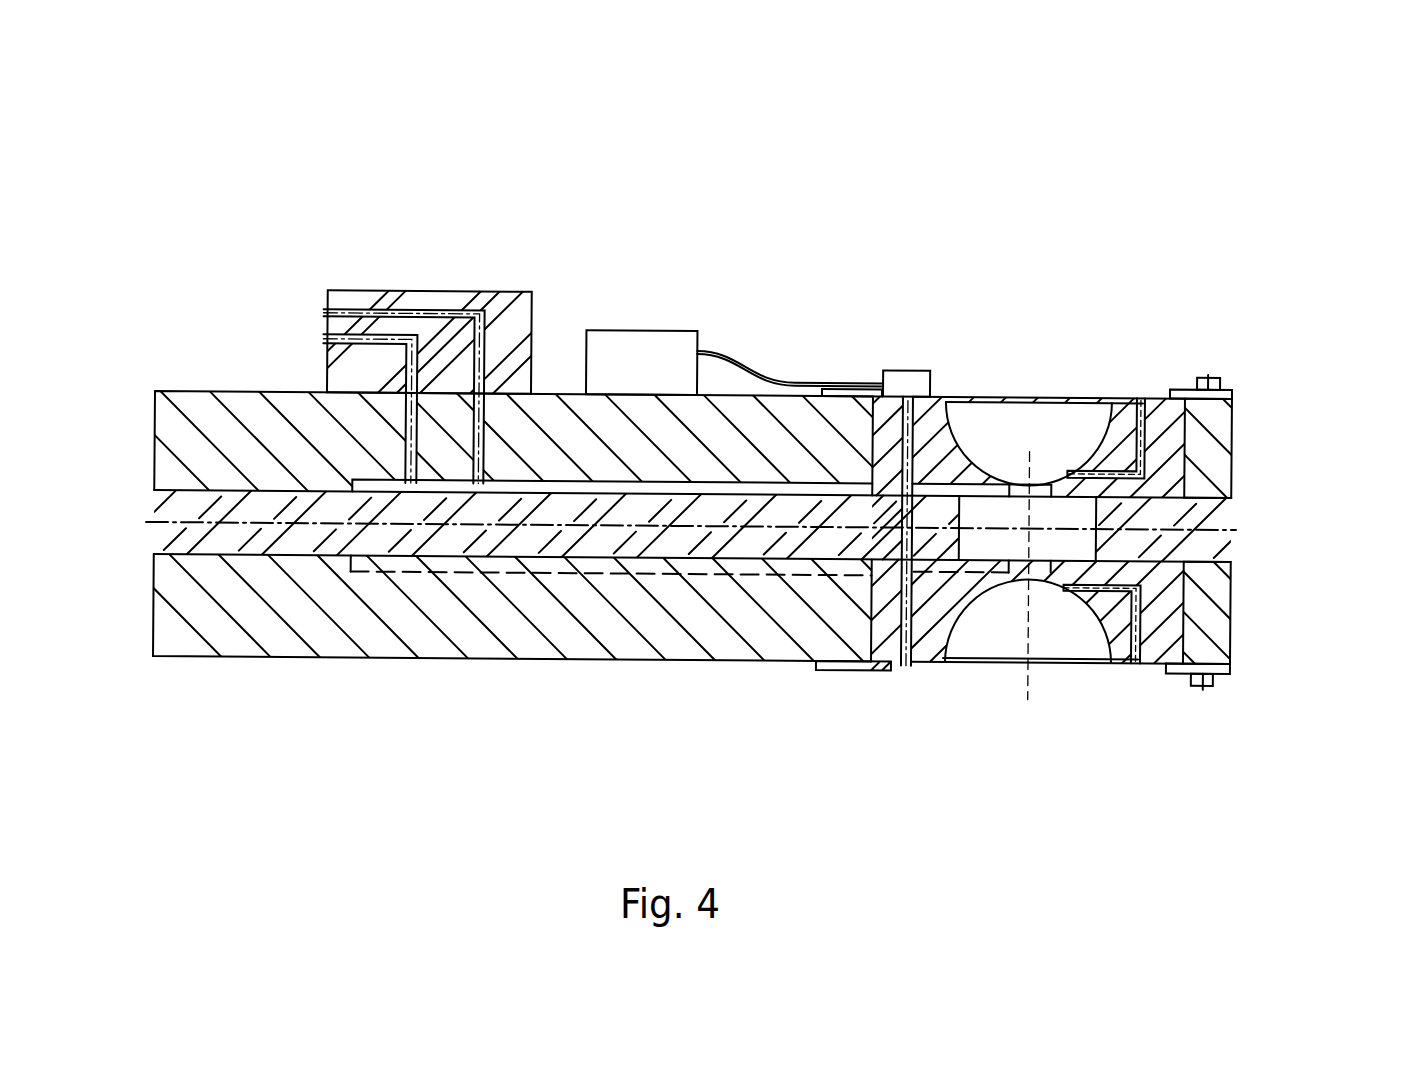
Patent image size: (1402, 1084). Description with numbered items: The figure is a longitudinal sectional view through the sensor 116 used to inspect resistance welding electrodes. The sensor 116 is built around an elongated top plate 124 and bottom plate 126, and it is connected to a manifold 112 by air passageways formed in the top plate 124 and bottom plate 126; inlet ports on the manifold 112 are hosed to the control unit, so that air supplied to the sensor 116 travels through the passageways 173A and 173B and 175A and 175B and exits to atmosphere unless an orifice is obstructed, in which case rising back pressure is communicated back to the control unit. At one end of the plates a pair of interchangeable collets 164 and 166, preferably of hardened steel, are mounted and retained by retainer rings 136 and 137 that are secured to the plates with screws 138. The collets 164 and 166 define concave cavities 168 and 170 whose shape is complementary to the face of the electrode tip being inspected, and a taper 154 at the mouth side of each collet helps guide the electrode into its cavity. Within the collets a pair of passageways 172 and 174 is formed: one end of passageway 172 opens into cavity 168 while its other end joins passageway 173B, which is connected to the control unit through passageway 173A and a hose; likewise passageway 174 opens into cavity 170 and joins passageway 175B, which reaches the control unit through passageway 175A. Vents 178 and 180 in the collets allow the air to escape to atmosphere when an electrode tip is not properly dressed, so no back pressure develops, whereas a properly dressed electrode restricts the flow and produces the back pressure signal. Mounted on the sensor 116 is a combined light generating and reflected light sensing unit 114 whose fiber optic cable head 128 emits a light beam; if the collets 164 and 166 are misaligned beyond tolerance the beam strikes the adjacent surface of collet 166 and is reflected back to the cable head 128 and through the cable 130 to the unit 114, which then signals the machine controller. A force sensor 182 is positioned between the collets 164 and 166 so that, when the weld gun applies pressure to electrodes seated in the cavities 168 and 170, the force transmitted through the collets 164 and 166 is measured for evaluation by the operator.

The manifold 112 is at (351, 297).
The combined light generating and reflected light sensing unit 114 is at (638, 343).
The sensor 116 is at (688, 660).
The top plate 124 is at (192, 400).
The bottom plate 126 is at (378, 657).
The cable head 128 is at (910, 372).
The cable 130 is at (752, 360).
The retainer ring 136 is at (1233, 396).
The retainer ring 137 is at (1217, 674).
The screws 138 is at (1217, 379).
The taper 154 is at (1117, 397).
The collet 164 is at (1165, 473).
The collet 166 is at (1165, 635).
The concave cavity 168 is at (950, 460).
The concave cavity 170 is at (1092, 632).
The passageway 172 is at (1010, 497).
The passageway 173A is at (393, 297).
The passageway 173B is at (778, 478).
The passageway 174 is at (1050, 573).
The passageway 175A is at (328, 334).
The passageway 175B is at (748, 573).
The vent 178 is at (1143, 397).
The vent 180 is at (1142, 642).
The force sensor 182 is at (1067, 545).